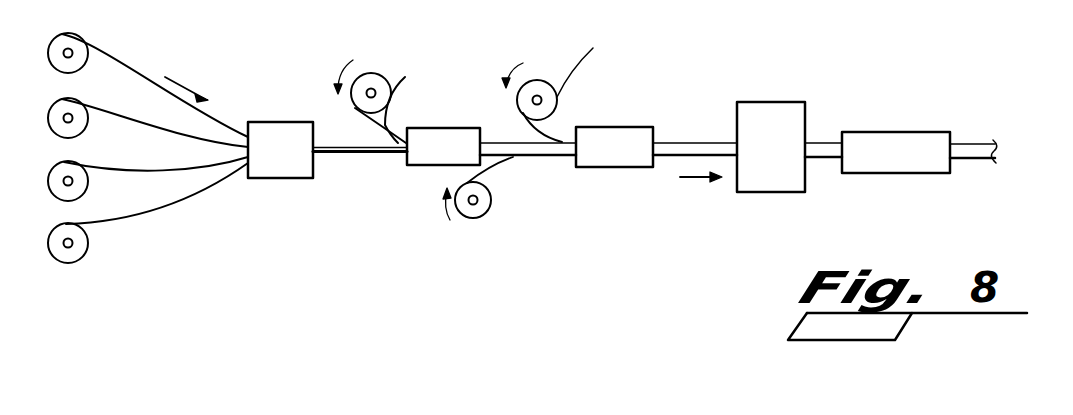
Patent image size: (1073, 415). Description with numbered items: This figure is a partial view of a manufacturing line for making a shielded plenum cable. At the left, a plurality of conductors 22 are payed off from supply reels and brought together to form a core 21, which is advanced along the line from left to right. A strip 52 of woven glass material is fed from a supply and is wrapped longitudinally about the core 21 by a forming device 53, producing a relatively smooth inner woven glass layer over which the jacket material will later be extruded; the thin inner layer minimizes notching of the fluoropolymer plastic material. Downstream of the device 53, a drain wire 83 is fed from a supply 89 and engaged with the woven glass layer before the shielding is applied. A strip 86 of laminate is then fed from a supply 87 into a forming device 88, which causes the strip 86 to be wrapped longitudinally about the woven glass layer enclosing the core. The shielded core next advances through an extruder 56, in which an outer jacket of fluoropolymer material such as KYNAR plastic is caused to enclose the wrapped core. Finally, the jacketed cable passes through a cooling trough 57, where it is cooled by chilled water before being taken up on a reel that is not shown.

The conductors 22 is at (117, 67).
The core 21 is at (356, 128).
The strip of woven glass material 52 is at (385, 127).
The device 53 is at (442, 165).
The drain wire 83 is at (512, 158).
The strip of laminate 86 is at (543, 133).
The supply 87 is at (550, 91).
The forming device 88 is at (615, 158).
The supply 89 is at (483, 216).
The extruder 56 is at (776, 103).
The trough 57 is at (907, 142).